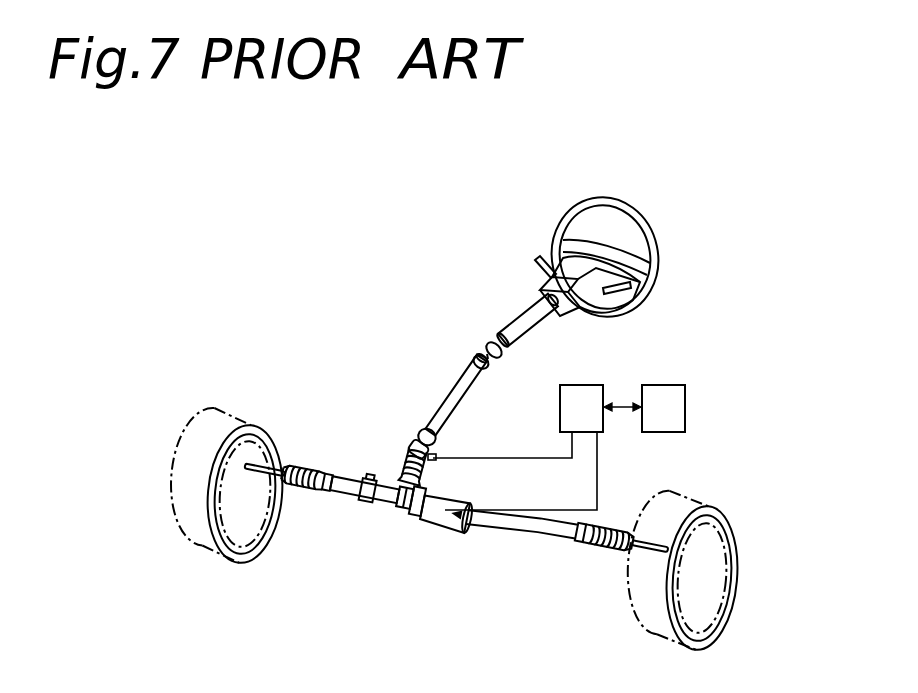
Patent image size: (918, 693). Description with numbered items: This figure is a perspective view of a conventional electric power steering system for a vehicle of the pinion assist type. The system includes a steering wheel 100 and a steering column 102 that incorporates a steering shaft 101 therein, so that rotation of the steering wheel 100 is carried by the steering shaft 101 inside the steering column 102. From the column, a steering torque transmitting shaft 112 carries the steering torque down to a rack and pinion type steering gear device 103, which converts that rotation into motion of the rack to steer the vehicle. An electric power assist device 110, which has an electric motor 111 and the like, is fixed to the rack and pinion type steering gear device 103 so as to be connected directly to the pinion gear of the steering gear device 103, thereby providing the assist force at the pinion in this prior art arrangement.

The steering wheel 100 is at (568, 212).
The steering shaft 101 is at (490, 346).
The steering column 102 is at (520, 318).
The rack and pinion type steering gear device 103 is at (378, 474).
The electric power assist device 110 is at (406, 514).
The electric motor 111 is at (456, 532).
The steering torque transmitting shaft 112 is at (462, 394).